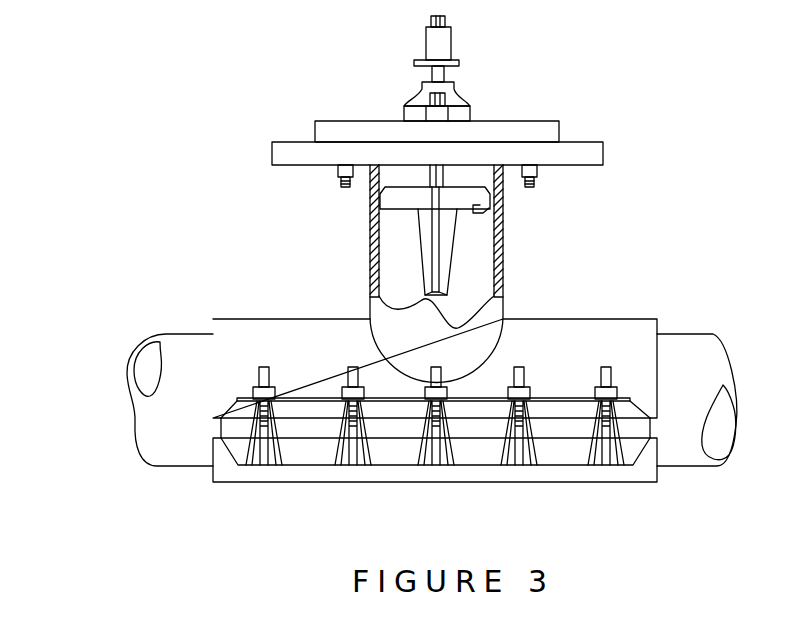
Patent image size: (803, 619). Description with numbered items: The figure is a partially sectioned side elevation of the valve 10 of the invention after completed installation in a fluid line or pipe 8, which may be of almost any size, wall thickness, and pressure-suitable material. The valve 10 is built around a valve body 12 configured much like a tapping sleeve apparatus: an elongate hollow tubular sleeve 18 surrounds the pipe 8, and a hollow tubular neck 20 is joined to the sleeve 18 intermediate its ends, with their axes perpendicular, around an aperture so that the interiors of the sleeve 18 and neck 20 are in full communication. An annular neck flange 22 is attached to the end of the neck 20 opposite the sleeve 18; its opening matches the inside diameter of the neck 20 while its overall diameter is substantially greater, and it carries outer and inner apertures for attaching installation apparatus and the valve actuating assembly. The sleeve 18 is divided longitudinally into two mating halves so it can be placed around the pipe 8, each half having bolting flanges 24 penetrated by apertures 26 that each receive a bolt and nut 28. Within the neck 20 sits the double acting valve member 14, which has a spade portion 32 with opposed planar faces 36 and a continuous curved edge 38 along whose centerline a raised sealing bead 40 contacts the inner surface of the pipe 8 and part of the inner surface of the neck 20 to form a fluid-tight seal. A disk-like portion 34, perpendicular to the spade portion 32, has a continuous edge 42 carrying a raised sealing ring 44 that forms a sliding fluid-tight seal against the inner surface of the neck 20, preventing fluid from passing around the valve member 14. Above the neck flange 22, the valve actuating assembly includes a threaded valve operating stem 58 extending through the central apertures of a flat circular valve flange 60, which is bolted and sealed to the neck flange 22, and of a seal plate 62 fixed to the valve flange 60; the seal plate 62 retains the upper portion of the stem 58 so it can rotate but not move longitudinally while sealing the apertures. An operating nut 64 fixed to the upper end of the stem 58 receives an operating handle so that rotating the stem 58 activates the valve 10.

The pipe 8 is at (677, 455).
The valve 10 is at (663, 252).
The valve body 12 is at (347, 302).
The valve member 14 is at (407, 217).
The sleeve 18 is at (632, 336).
The neck 20 is at (485, 318).
The neck flange 22 is at (582, 151).
The bolting flanges 24 is at (235, 406).
The apertures 26 is at (238, 410).
The bolt and nut 28 is at (347, 460).
The spade portion 32 is at (447, 232).
The disk-like portion 34 is at (503, 213).
The planar faces 36 is at (407, 258).
The curved edge 38 is at (447, 278).
The sealing bead 40 is at (447, 259).
The edge 42 is at (505, 193).
The sealing ring 44 is at (385, 200).
The valve operating stem 58 is at (433, 72).
The valve flange 60 is at (325, 127).
The seal plate 62 is at (454, 87).
The operating nut 64 is at (436, 45).